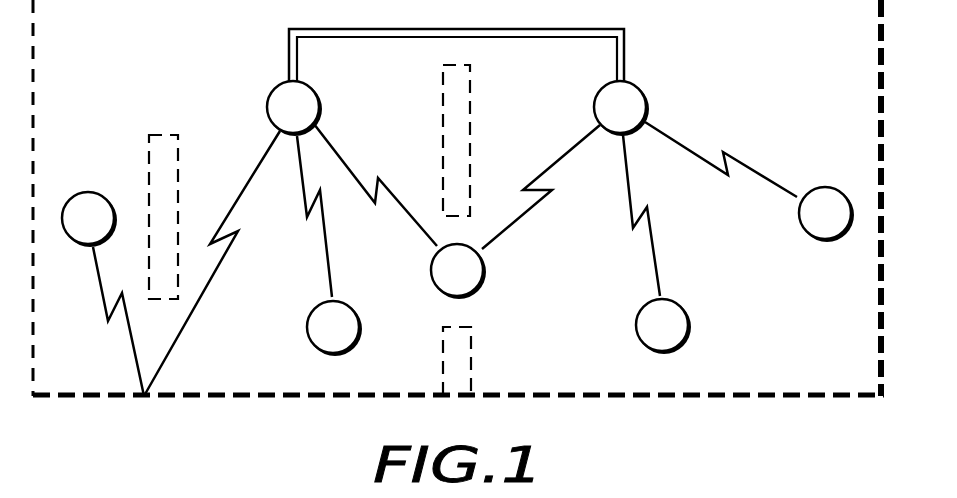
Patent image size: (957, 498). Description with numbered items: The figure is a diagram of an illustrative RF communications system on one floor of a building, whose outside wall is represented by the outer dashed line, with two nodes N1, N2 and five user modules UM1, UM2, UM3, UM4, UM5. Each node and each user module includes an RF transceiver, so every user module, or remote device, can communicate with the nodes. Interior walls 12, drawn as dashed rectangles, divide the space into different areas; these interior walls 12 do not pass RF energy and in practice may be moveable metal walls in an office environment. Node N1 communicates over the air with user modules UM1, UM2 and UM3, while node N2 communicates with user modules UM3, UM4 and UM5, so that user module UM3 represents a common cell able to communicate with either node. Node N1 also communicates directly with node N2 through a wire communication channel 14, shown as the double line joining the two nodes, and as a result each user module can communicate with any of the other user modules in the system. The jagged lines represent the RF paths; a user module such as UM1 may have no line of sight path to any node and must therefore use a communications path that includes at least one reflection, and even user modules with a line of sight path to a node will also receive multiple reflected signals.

The interior walls 12 is at (178, 163).
The wire communication channel 14 is at (522, 38).
The node N1 is at (294, 108).
The node N2 is at (621, 108).
The user module UM1 is at (89, 219).
The user module UM2 is at (334, 328).
The user module UM3 is at (458, 271).
The user module UM4 is at (663, 326).
The user module UM5 is at (826, 214).